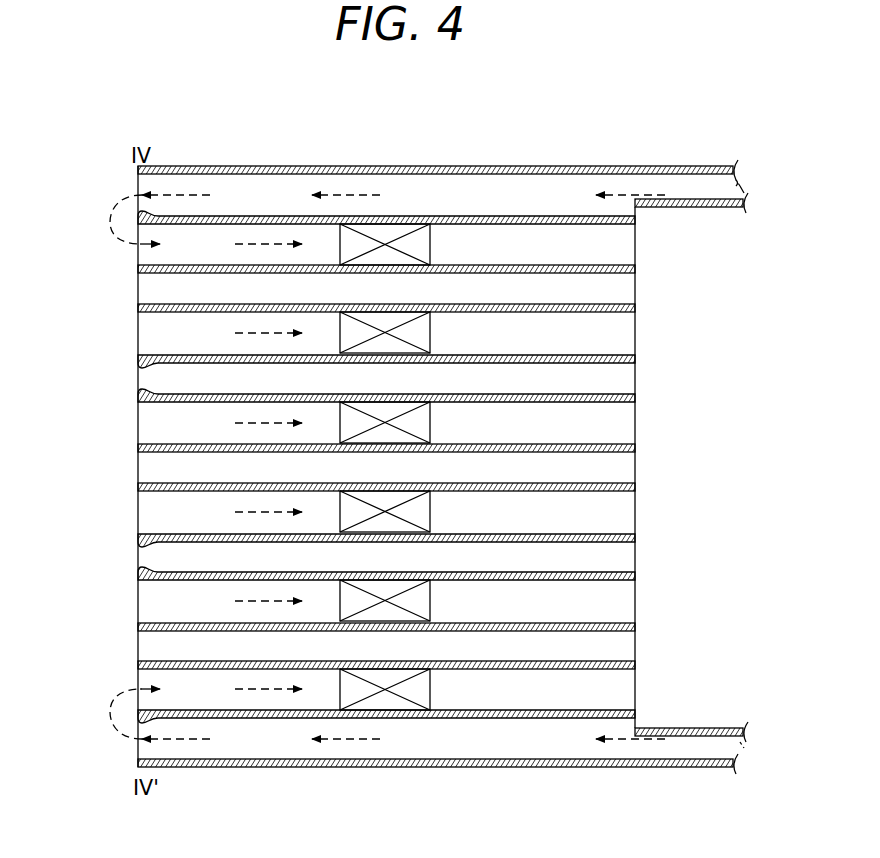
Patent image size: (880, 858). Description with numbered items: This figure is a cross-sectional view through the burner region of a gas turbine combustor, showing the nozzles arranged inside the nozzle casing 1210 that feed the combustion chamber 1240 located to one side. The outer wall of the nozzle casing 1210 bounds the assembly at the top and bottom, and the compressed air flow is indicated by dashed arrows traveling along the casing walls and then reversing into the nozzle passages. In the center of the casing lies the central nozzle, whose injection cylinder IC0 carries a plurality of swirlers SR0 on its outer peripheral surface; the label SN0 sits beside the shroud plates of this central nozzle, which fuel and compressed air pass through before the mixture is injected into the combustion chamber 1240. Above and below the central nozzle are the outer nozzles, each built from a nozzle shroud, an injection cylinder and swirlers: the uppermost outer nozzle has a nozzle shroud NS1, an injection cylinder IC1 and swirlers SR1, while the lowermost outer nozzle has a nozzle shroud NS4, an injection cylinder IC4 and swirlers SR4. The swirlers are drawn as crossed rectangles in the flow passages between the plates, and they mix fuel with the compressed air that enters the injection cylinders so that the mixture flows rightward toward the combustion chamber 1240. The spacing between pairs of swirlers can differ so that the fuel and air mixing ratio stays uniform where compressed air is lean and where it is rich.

The nozzle casing 1210 is at (499, 166).
The combustion chamber 1240 is at (674, 498).
The nozzle shroud NS1 is at (234, 216).
The nozzle shroud NS4 is at (234, 718).
The nozzle plate pair SN0 is at (197, 394).
The swirlers SR1 is at (397, 235).
The swirlers SR0 is at (420, 428).
The swirlers SR4 is at (397, 705).
The injection cylinder IC1 is at (166, 273).
The injection cylinder IC0 is at (166, 452).
The injection cylinder IC4 is at (170, 661).